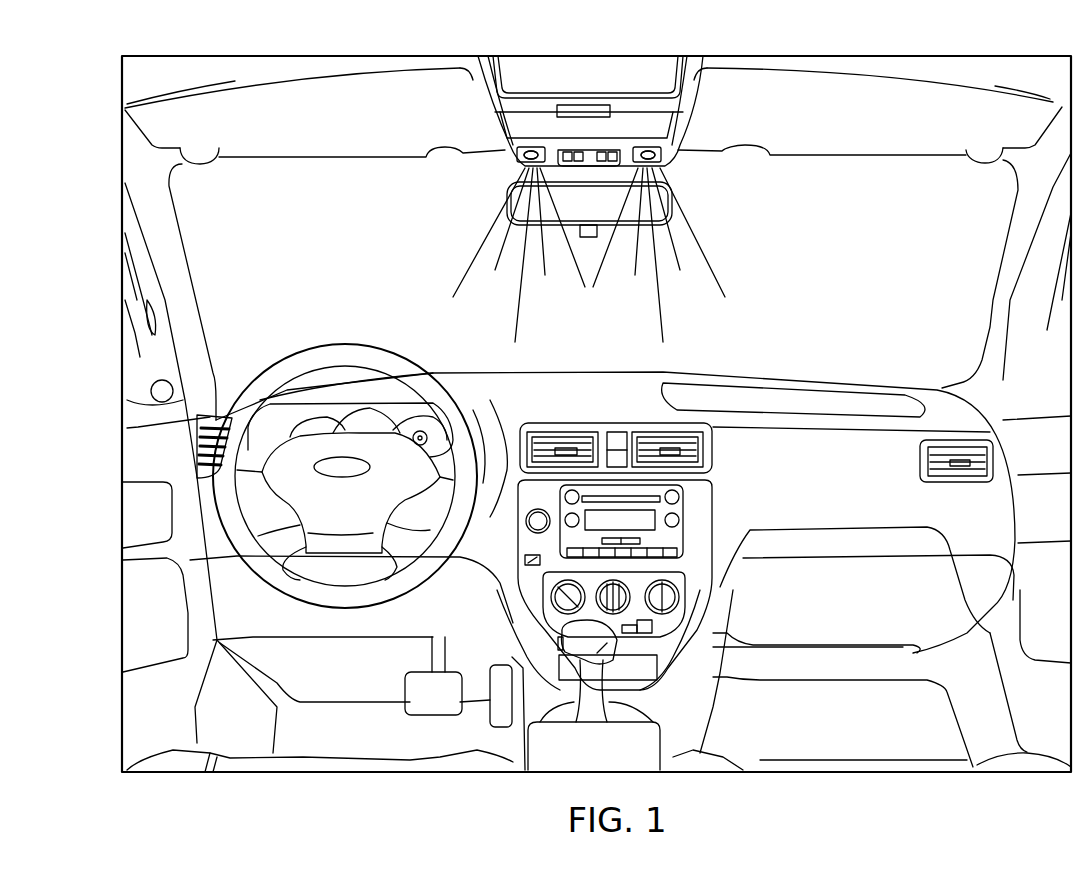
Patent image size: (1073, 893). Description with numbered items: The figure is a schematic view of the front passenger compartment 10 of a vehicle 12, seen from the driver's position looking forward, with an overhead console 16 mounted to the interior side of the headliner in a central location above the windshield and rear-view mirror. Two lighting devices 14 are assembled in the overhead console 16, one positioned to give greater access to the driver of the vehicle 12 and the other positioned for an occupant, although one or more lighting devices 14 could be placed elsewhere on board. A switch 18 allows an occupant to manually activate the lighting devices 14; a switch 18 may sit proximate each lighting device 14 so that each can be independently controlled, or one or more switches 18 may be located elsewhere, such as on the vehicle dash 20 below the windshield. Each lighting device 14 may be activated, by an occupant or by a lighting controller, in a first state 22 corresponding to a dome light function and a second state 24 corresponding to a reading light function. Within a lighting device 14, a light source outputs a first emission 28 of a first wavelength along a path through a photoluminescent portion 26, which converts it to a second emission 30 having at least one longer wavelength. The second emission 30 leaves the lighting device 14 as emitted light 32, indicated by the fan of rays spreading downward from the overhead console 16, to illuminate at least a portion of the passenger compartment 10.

The passenger compartment 10 is at (228, 268).
The vehicle 12 is at (440, 124).
The lighting device 14 is at (533, 147).
The overhead console 16 is at (680, 106).
The switch 18 is at (541, 554).
The vehicle dash 20 is at (483, 373).
The first state 22 is at (681, 283).
The second state 24 is at (497, 278).
The photoluminescent portion 26 is at (506, 166).
The first emission 28 is at (506, 166).
The second emission 30 is at (712, 247).
The emitted light 32 is at (460, 247).